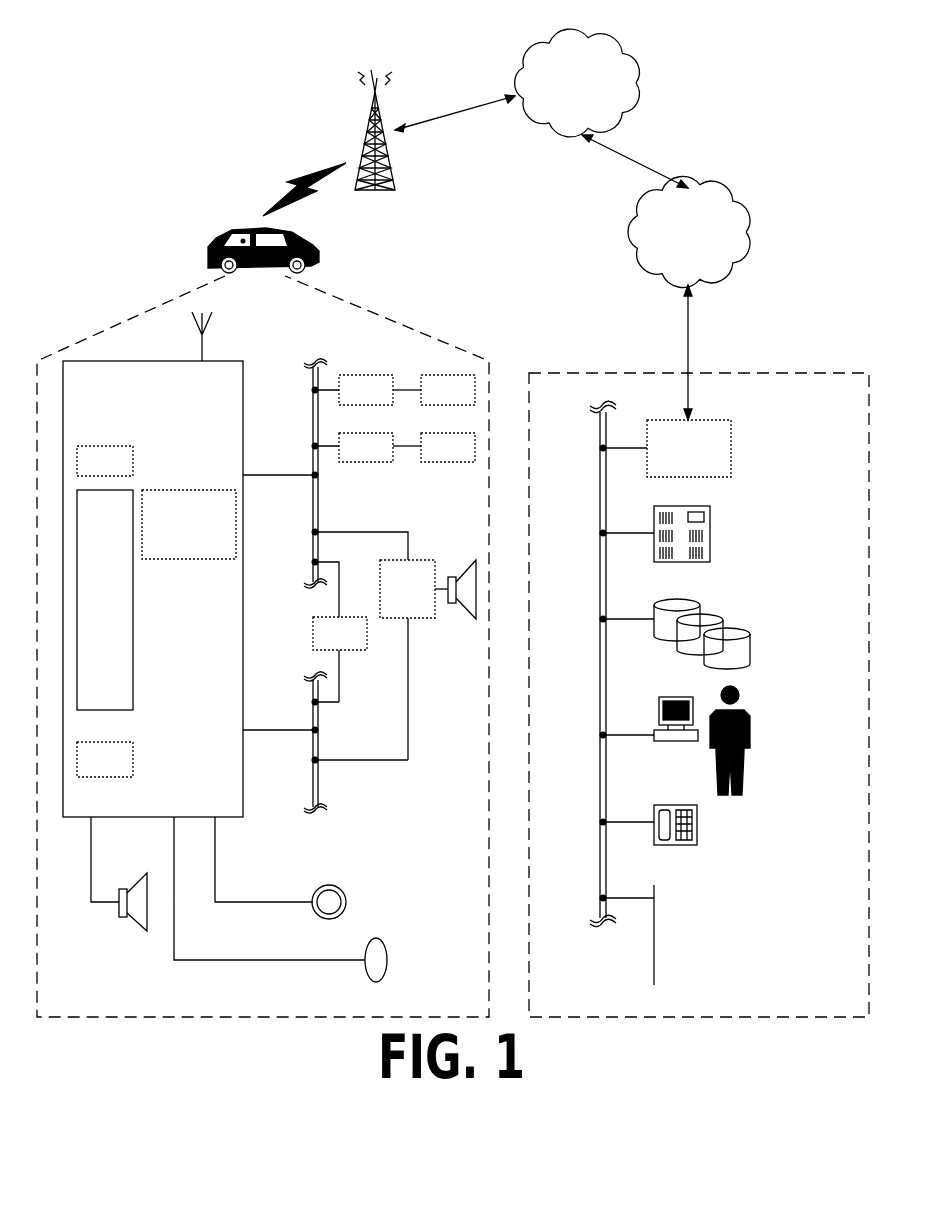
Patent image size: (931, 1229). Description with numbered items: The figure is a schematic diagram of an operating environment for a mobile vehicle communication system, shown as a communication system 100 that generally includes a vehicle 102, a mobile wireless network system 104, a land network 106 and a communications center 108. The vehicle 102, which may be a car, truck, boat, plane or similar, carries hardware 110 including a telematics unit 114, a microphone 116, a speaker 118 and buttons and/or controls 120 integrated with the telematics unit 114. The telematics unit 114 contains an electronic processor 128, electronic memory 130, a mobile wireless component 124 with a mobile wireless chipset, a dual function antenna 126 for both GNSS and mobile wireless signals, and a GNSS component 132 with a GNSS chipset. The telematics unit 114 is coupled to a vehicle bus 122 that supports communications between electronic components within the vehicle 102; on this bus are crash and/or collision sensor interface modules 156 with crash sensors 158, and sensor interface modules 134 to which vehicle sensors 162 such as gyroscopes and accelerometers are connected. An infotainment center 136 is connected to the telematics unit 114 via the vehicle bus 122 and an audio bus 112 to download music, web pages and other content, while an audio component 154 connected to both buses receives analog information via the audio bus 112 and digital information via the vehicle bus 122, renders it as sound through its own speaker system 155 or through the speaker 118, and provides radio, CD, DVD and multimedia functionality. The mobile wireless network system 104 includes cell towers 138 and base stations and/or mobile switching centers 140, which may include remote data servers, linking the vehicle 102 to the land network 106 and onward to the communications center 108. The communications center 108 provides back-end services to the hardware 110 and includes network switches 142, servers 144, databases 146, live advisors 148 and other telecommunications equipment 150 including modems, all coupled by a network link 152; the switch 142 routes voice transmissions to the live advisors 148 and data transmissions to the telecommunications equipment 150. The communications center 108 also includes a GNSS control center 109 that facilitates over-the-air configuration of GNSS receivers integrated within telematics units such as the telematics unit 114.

The communication system 100 is at (212, 79).
The vehicle 102 is at (220, 246).
The mobile wireless network system 104 is at (490, 190).
The land network 106 is at (689, 232).
The communications center 108 is at (834, 980).
The GNSS control center 109 is at (689, 935).
The hardware 110 is at (446, 1008).
The audio bus 112 is at (312, 782).
The telematics unit 114 is at (222, 793).
The microphone 116 is at (378, 938).
The speaker 118 is at (128, 925).
The buttons and/or controls 120 is at (328, 886).
The vehicle bus 122 is at (318, 517).
The mobile wireless component 124 is at (105, 461).
The dual function antenna 126 is at (205, 355).
The electronic processor 128 is at (105, 600).
The electronic memory 130 is at (105, 759).
The GNSS component 132 is at (189, 524).
The sensor interface modules 134 is at (366, 447).
The infotainment center 136 is at (340, 659).
The cell towers 138 is at (383, 102).
The base stations and/or mobile switching centers 140 is at (577, 83).
The network switches 142 is at (689, 448).
The servers 144 is at (711, 526).
The databases 146 is at (753, 642).
The live advisors 148 is at (748, 712).
The telecommunications equipment 150 is at (700, 828).
The network link 152 is at (600, 672).
The audio component 154 is at (414, 660).
The speaker system 155 is at (460, 605).
The crash and/or collision sensor interface modules 156 is at (366, 390).
The crash sensors 158 is at (434, 390).
The vehicle sensors 162 is at (434, 447).